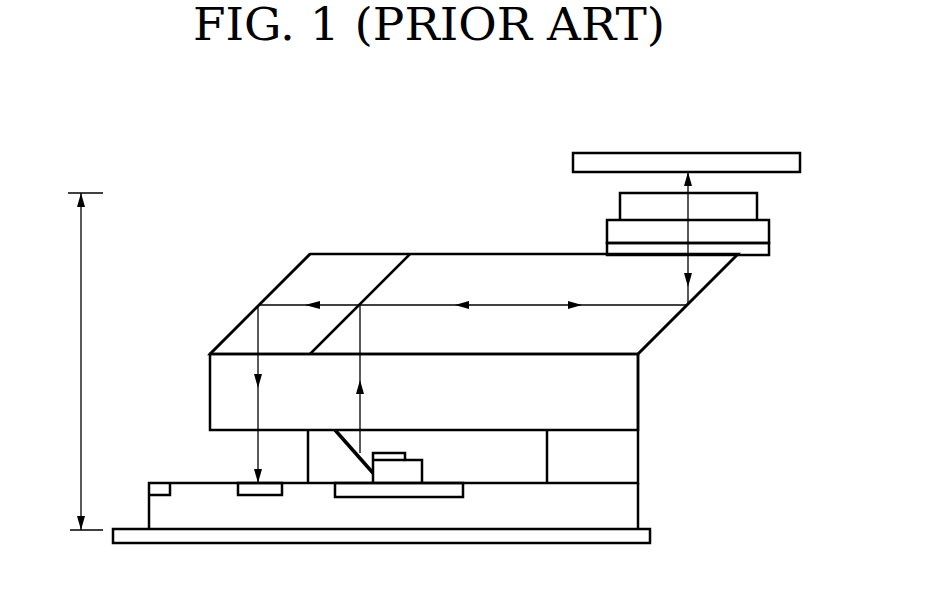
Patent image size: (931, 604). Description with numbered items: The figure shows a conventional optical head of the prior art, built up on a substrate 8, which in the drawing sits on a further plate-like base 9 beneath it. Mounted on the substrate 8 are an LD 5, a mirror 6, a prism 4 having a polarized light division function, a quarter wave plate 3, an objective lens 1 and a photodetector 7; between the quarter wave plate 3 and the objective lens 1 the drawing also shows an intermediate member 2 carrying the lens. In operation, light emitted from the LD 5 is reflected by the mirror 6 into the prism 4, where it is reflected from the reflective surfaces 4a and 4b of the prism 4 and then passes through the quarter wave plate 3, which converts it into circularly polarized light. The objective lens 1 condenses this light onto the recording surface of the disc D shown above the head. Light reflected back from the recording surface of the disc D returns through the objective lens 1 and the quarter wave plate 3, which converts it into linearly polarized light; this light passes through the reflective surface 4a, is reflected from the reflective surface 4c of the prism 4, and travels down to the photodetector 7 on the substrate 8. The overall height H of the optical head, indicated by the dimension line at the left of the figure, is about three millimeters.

The objective lens 1 is at (748, 210).
The lens holder 2 is at (758, 237).
The quarter wave plate 3 is at (762, 250).
The prism 4 is at (510, 253).
The reflective surface 4a is at (384, 280).
The reflective surface 4b is at (676, 316).
The reflective surface 4c is at (279, 285).
The LD 5 is at (395, 453).
The mirror 6 is at (308, 446).
The photodetector 7 is at (257, 496).
The substrate 8 is at (633, 503).
The substrate 9 is at (633, 537).
The disc D is at (773, 152).
The height H is at (87, 361).